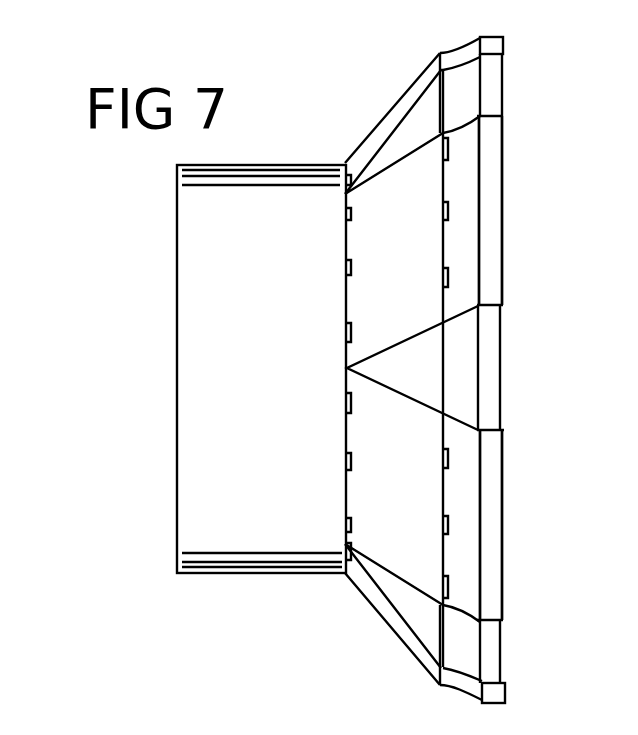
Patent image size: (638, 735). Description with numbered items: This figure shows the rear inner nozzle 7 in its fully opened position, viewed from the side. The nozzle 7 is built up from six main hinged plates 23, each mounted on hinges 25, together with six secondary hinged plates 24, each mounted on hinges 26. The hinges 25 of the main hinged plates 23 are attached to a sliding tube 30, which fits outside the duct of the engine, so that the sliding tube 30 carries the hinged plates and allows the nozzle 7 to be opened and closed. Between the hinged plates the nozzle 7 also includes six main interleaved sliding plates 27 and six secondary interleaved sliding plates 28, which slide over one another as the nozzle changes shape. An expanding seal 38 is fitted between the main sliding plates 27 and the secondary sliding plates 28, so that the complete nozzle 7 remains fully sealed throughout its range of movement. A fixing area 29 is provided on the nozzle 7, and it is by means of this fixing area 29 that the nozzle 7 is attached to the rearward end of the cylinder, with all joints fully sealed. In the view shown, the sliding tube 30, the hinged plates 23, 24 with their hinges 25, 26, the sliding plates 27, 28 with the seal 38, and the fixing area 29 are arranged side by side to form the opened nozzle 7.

The nozzle 7 is at (505, 288).
The main hinged plate 23 is at (398, 228).
The secondary hinged plate 24 is at (467, 278).
The hinge 25 is at (346, 267).
The hinge 26 is at (443, 288).
The main interleaved sliding plate 27 is at (418, 368).
The secondary interleaved sliding plate 28 is at (465, 657).
The fixing area 29 is at (487, 37).
The sliding tube 30 is at (237, 520).
The expanding seal 38 is at (443, 630).